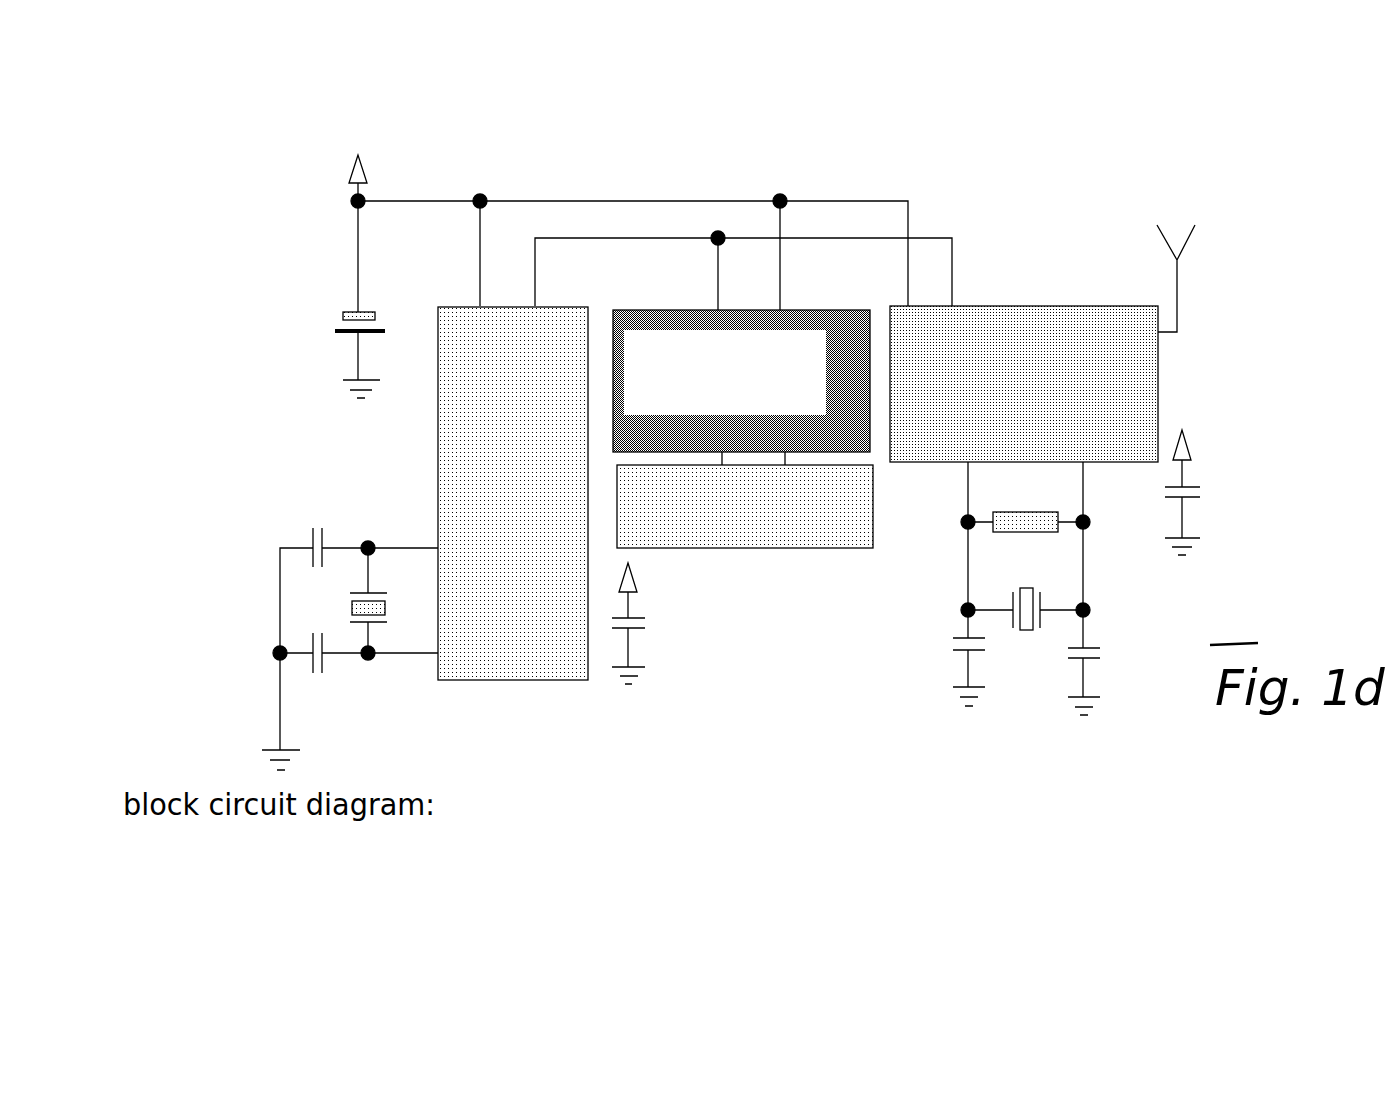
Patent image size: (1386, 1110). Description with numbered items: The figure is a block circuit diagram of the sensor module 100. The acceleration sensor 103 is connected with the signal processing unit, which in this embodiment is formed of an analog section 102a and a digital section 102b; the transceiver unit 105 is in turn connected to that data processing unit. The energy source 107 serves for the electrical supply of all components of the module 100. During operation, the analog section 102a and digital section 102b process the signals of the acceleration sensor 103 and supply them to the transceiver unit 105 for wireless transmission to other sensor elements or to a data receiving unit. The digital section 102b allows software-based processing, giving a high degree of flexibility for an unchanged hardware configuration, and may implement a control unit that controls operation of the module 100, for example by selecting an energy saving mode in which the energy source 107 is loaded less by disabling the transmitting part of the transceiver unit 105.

The sensor module 100 is at (990, 157).
The acceleration sensor 103 is at (807, 322).
The transceiver unit 105 is at (1158, 385).
The energy source 107 is at (328, 318).
The analog section 102a is at (770, 548).
The digital section 102b is at (538, 683).